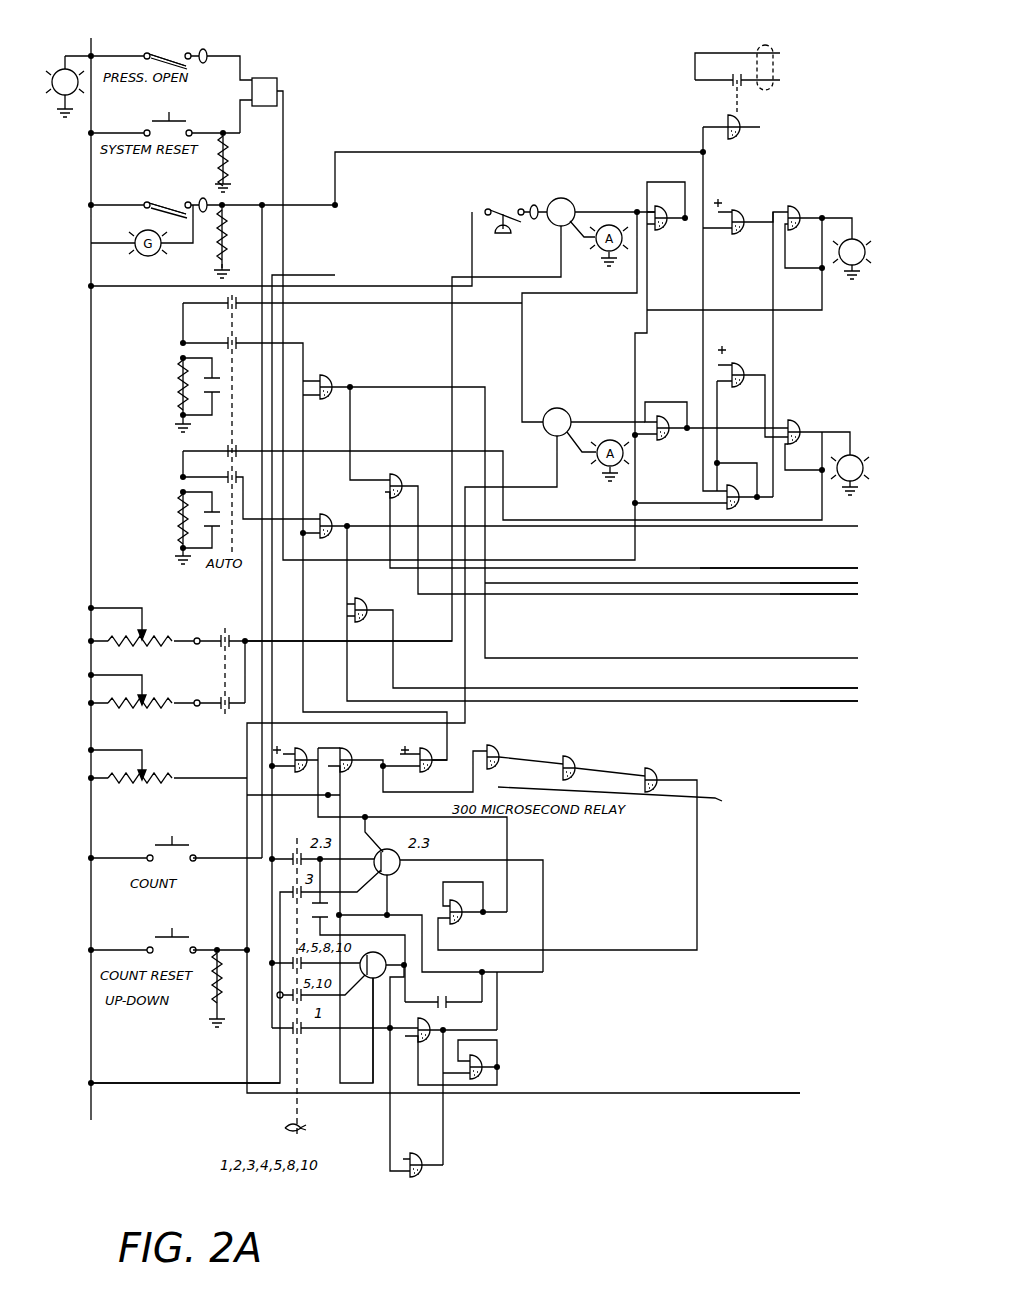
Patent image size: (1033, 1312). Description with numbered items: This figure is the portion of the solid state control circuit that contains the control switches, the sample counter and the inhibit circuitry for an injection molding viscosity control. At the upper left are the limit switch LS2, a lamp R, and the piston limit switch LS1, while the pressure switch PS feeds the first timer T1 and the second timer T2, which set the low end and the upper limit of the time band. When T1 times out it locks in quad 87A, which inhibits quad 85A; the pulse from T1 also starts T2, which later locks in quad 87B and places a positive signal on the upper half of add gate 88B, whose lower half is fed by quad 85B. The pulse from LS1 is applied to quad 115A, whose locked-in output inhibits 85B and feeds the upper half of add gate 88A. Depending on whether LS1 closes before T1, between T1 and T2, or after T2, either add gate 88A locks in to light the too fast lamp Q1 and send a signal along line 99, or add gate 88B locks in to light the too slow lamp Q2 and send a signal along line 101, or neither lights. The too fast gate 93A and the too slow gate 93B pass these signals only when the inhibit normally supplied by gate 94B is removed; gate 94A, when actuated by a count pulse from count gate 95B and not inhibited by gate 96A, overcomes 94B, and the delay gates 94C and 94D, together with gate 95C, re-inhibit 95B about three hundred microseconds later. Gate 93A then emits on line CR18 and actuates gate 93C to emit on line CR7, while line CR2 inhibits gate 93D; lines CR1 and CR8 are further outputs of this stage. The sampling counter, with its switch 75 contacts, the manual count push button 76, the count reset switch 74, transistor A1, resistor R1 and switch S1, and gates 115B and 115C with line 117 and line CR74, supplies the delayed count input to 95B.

The count reset switch 74 is at (172, 944).
The switch 75 is at (282, 1128).
The push button 76 is at (174, 852).
The quad 85A is at (738, 231).
The quad 85B is at (740, 364).
The quad 87A is at (666, 226).
The quad 87B is at (666, 440).
The add gate 88A is at (800, 208).
The add gate 88B is at (804, 424).
The too fast gate 93A is at (352, 372).
The too slow gate 93B is at (348, 512).
The gate 93C is at (408, 462).
The gate 93D is at (368, 604).
The gate 94A is at (362, 752).
The gate 94B is at (434, 752).
The delay gate 94C is at (504, 756).
The delay gate 94D is at (600, 752).
The count gate 95B is at (468, 920).
The gate 95C is at (660, 774).
The gate 96A is at (314, 752).
The line 99 is at (826, 308).
The line 101 is at (824, 510).
The quad 115A is at (744, 502).
The gate 115B is at (438, 1026).
The gate 115C is at (500, 1070).
The line 117 is at (417, 858).
The too fast lamp Q1 is at (862, 240).
The too slow lamp Q2 is at (862, 456).
The first timer T1 is at (561, 212).
The second timer T2 is at (557, 422).
The transistor A1 is at (350, 854).
The resistor R1 is at (411, 875).
The switch S1 is at (367, 887).
The pressure switch PS is at (503, 210).
The piston limit switch LS1 is at (173, 204).
The limit switch LS2 is at (172, 58).
The lamp R is at (65, 82).
The line CR1 is at (838, 676).
The line CR2 is at (840, 560).
The line CR7 is at (846, 606).
The line CR8 is at (836, 712).
The line CR18 is at (760, 560).
The line CR74 is at (796, 1096).